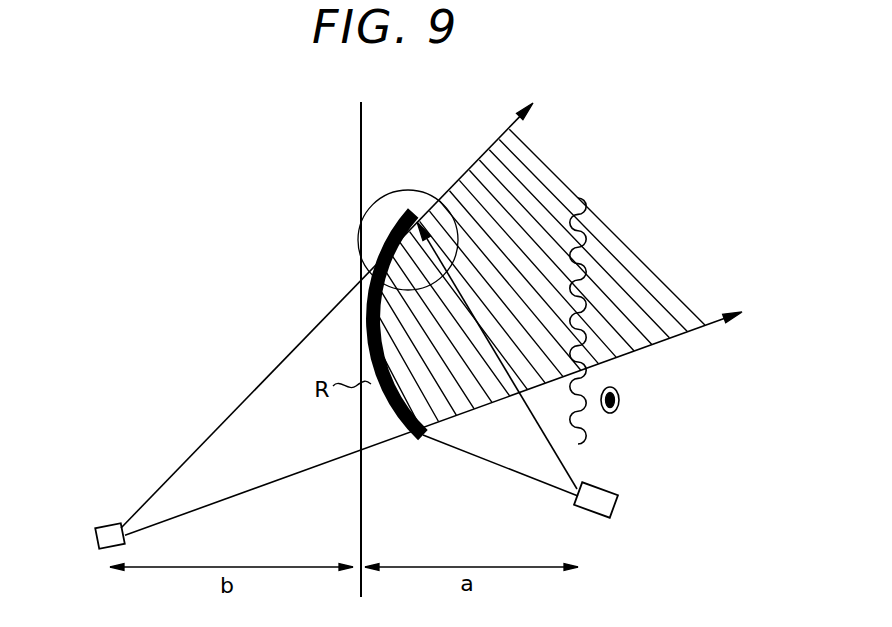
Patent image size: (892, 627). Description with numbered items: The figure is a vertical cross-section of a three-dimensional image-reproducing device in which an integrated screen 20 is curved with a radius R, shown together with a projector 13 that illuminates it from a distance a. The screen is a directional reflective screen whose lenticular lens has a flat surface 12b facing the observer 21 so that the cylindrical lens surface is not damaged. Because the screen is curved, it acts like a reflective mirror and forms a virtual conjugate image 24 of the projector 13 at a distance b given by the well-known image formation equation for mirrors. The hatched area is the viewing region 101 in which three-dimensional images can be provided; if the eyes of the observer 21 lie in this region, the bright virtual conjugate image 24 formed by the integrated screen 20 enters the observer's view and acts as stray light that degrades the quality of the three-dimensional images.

The flat surface 12b is at (457, 236).
The viewing region 101 is at (575, 191).
The integrated screen 20 is at (370, 319).
The observer 21 is at (621, 398).
The virtual conjugate image 24 is at (106, 522).
The projector 13 is at (618, 500).